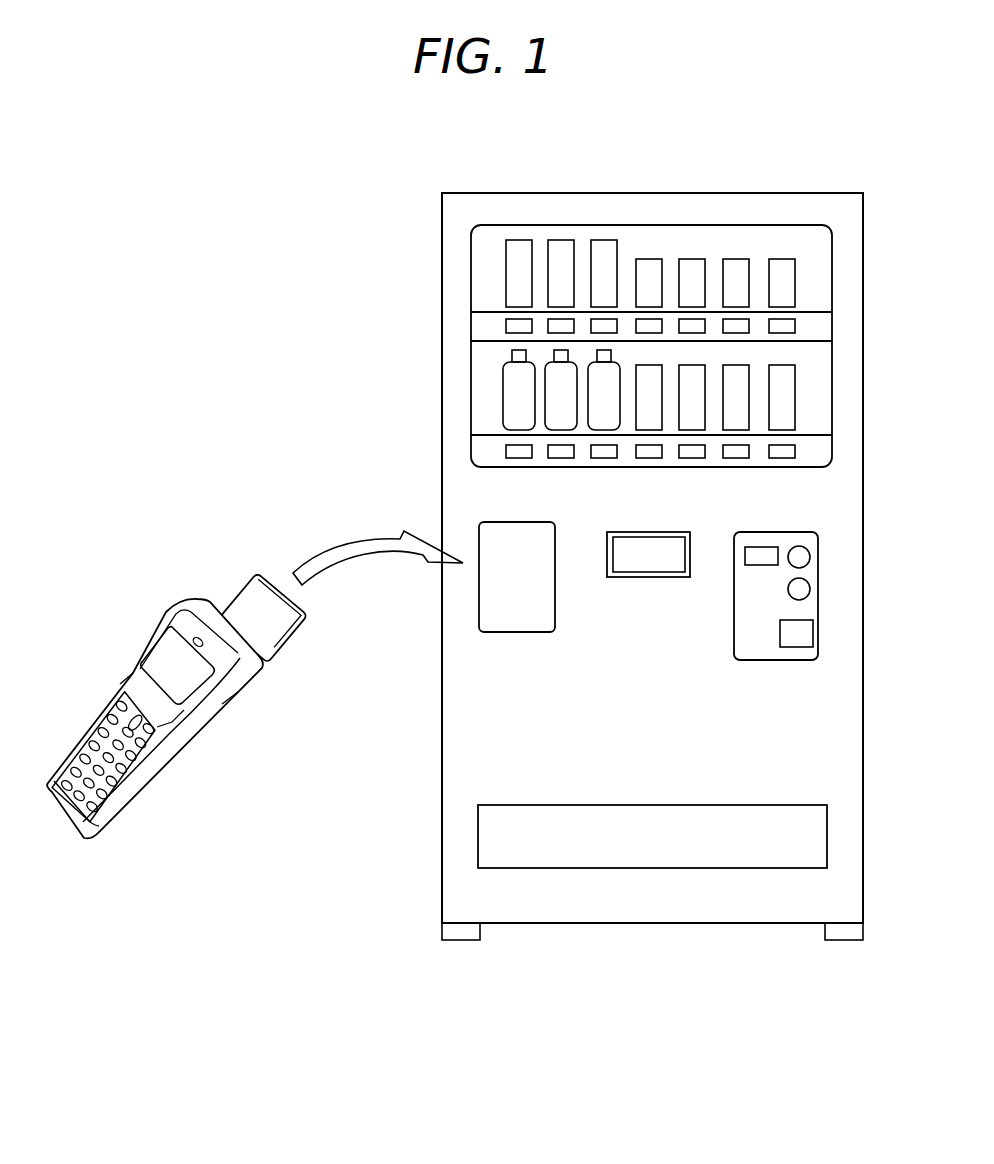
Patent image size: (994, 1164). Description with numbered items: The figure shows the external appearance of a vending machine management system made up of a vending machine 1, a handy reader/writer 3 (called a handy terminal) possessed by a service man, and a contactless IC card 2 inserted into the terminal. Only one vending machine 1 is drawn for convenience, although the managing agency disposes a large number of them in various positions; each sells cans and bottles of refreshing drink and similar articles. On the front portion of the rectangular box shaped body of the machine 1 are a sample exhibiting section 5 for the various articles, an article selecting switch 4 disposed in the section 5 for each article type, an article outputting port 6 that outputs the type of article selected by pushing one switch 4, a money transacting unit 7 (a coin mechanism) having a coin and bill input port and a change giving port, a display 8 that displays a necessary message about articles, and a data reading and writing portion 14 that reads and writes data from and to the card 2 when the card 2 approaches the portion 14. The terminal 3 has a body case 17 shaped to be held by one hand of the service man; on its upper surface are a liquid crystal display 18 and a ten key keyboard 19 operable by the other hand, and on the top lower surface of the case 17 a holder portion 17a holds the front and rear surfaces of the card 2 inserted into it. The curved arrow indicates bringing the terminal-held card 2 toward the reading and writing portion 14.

The vending machine 1 is at (724, 183).
The contactless IC card 2 is at (243, 588).
The handy reader/writer 3 is at (184, 716).
The article selecting switch 4 is at (822, 328).
The sample exhibiting section 5 is at (822, 274).
The article outputting port 6 is at (660, 855).
The money transacting unit 7 is at (811, 607).
The display 8 is at (648, 563).
The data reading and writing portion 14 is at (518, 622).
The body case 17 is at (187, 745).
The holder portion 17a is at (228, 708).
The liquid crystal display 18 is at (165, 648).
The ten key keyboard 19 is at (102, 723).